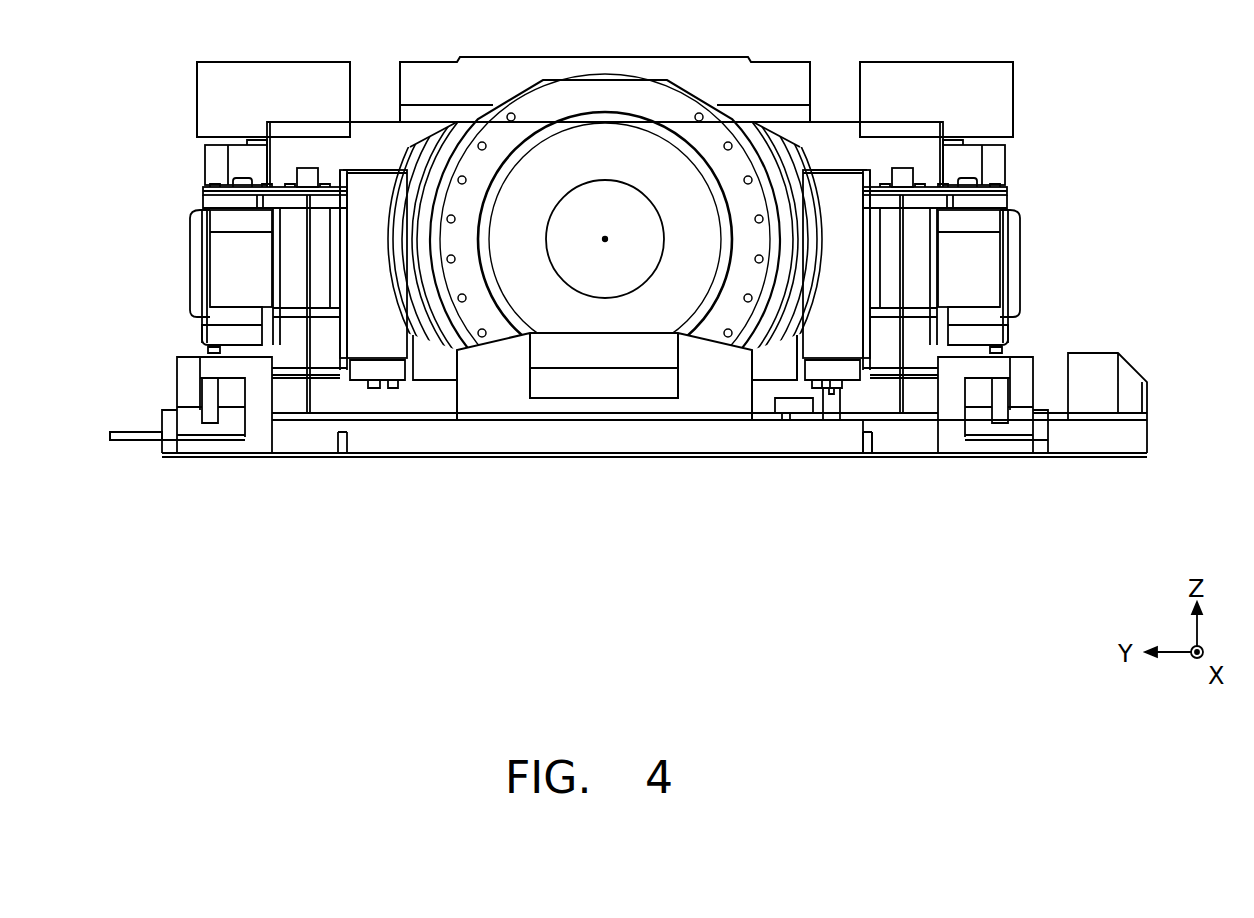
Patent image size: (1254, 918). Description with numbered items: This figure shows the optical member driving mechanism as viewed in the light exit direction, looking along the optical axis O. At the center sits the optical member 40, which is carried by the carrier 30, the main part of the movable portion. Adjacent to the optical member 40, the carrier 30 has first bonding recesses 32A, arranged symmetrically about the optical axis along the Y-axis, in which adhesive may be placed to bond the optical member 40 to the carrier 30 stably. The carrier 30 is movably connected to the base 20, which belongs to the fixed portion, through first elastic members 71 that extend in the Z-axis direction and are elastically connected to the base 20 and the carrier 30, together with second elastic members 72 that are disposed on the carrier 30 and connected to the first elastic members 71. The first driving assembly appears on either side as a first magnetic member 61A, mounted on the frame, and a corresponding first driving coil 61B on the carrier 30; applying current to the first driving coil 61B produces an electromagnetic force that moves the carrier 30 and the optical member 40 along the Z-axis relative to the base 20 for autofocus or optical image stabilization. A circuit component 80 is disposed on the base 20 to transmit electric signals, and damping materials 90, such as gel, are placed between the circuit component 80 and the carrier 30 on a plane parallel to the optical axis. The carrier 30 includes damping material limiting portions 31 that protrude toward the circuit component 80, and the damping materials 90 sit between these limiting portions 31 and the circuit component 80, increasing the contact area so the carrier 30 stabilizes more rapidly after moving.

The base 20 is at (1142, 437).
The carrier 30 is at (793, 122).
The damping material limiting portion 31 is at (780, 399).
The first bonding recess 32A is at (405, 283).
The optical member 40 is at (605, 145).
The first magnetic member 61A is at (1005, 98).
The first driving coil 61B is at (997, 162).
The first elastic member 71 is at (902, 257).
The second elastic member 72 is at (228, 190).
The circuit component 80 is at (887, 417).
The damping material 90 is at (828, 398).